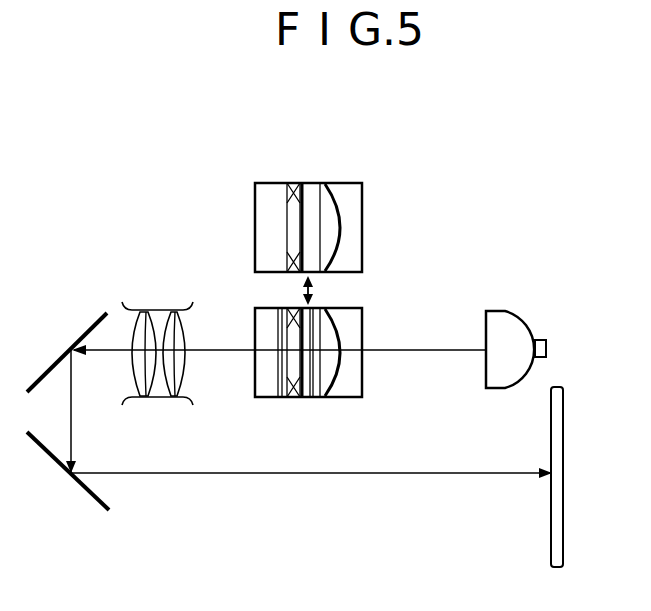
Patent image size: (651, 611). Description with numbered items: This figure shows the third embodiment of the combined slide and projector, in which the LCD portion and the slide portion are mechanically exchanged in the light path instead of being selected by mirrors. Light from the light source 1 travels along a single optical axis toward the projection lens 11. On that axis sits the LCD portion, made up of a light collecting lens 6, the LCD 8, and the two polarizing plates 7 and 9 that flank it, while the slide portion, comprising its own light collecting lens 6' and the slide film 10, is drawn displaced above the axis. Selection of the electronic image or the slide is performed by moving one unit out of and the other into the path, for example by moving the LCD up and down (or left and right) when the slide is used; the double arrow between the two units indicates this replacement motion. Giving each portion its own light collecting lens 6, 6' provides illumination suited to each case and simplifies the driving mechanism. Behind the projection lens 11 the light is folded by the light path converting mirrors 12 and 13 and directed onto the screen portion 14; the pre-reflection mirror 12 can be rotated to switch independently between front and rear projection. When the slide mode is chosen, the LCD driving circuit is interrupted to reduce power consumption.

The light source 1 is at (510, 330).
The light collecting lens 6 is at (332, 376).
The light collecting lens 6' is at (330, 203).
The polarizing plate 7 is at (312, 398).
The LCD 8 is at (300, 398).
The polarizing plate 9 is at (278, 398).
The slide film 10 is at (296, 184).
The projection lens 11 is at (158, 318).
The light path converting portion (mirror) 12 is at (47, 370).
The light path converting portion (mirror) 13 is at (53, 460).
The screen portion 14 is at (557, 457).